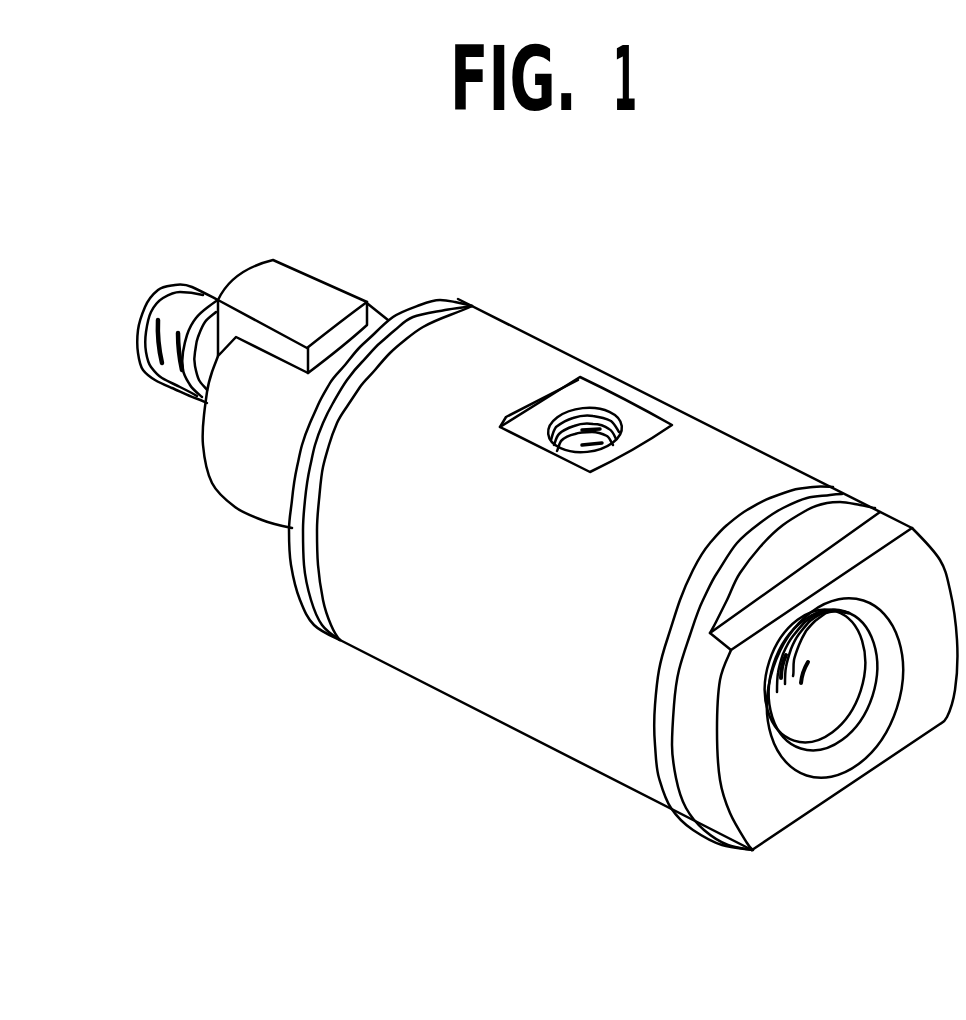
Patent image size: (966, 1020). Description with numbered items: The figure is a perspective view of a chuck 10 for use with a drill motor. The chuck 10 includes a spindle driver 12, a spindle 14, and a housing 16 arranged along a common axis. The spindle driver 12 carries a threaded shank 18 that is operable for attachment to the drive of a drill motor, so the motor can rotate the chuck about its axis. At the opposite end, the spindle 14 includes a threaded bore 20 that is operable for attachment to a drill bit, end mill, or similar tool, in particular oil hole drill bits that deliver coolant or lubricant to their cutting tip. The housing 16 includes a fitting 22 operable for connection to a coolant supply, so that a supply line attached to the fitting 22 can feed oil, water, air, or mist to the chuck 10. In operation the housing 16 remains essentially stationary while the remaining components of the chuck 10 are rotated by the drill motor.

The chuck 10 is at (583, 212).
The spindle driver 12 is at (295, 280).
The spindle 14 is at (698, 790).
The housing 16 is at (456, 677).
The threaded shank 18 is at (218, 300).
The threaded bore 20 is at (827, 730).
The fitting 22 is at (587, 410).